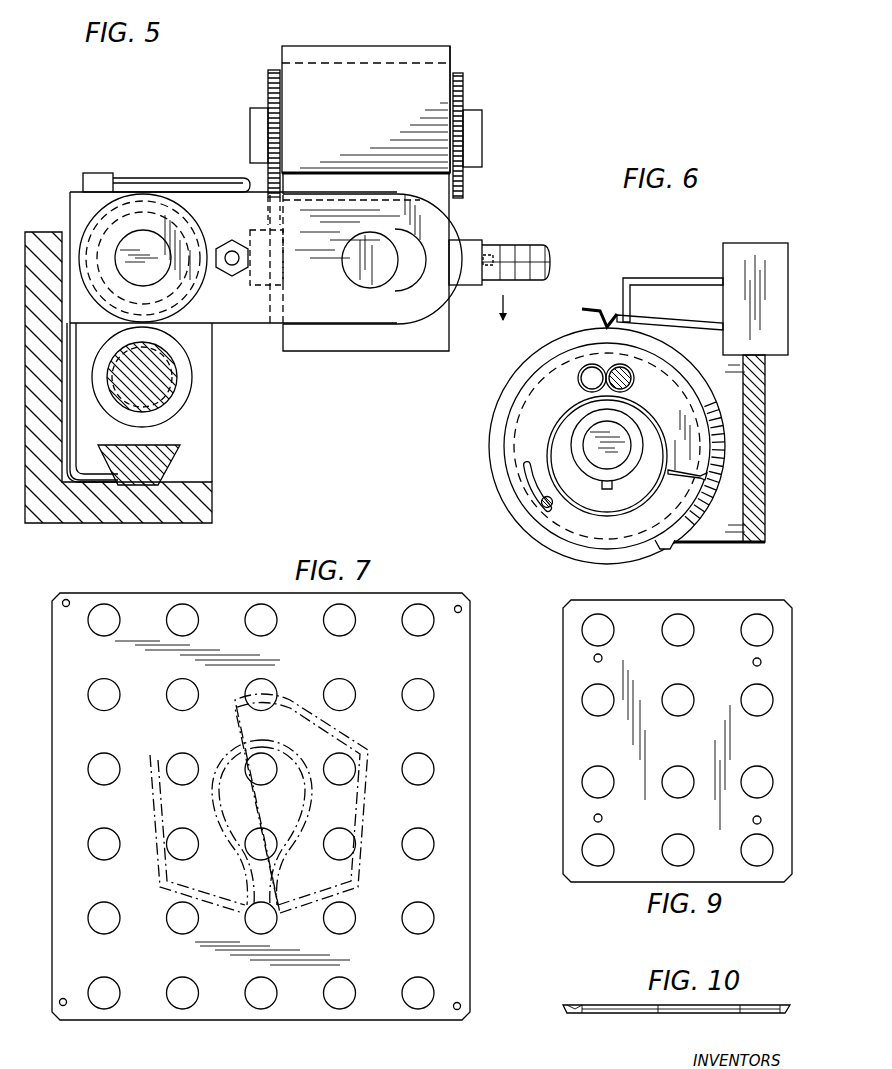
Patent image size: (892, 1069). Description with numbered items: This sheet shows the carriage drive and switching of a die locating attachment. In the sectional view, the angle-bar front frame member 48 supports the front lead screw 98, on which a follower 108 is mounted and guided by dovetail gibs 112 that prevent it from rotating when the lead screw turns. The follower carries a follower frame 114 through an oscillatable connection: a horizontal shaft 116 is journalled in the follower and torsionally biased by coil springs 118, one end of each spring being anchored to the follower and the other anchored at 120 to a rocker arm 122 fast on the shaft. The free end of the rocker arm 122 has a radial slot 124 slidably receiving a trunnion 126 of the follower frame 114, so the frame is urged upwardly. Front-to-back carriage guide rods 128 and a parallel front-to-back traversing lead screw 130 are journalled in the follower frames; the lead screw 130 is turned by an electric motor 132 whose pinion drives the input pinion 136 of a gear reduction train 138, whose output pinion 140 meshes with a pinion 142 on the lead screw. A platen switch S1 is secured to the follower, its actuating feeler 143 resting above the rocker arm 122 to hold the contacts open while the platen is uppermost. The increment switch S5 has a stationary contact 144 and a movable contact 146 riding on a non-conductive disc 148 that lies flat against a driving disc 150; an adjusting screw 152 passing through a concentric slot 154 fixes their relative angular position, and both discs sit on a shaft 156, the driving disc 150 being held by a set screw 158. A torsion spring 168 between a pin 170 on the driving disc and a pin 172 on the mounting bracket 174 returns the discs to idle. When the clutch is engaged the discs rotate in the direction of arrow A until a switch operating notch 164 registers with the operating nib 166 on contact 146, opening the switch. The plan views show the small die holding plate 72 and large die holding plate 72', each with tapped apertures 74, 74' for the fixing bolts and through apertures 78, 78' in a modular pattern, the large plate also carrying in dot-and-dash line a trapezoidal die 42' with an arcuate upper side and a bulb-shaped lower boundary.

In FIG. 5, the front and back members 48 is at (212, 510).
In FIG. 5, the front lead screw 98 is at (170, 385).
In FIG. 5, the follower 108 is at (212, 450).
In FIG. 5, the dovetail gibs 112 is at (168, 465).
In FIG. 5, the follower frame 114 is at (425, 348).
In FIG. 5, the horizontal shaft 116 is at (145, 258).
In FIG. 5, the coil springs 118 is at (118, 325).
In FIG. 5, the spring anchor 120 is at (232, 258).
In FIG. 5, the rocker arm 122 is at (346, 325).
In FIG. 5, the radial slots 124 is at (395, 285).
In FIG. 5, the trunnions 126 is at (355, 272).
In FIG. 5, the carriage guide rods 128 is at (492, 248).
In FIG. 5, the front-to-back traversing lead screw 130 is at (540, 243).
In FIG. 5, the front-to-back traversing electric motor 132 is at (410, 63).
In FIG. 5, the input pinion 136 is at (463, 80).
In FIG. 5, the gear reduction train 138 is at (452, 48).
In FIG. 5, the output pinion 140 is at (274, 70).
In FIG. 5, the pinion 142 is at (275, 325).
In FIG. 5, the actuating feeler 143 is at (222, 168).
In FIG. 6, the stationary contact 144 is at (700, 281).
In FIG. 6, the movable contact 146 is at (700, 323).
In FIG. 6, the electrically non-conductive disc 148 is at (489, 443).
In FIG. 6, the driving disc 150 is at (700, 420).
In FIG. 6, the adjusting screw 152 is at (543, 505).
In FIG. 6, the concentric slot 154 is at (700, 478).
In FIG. 6, the shaft 156 is at (622, 455).
In FIG. 6, the set screw 158 is at (560, 470).
In FIG. 6, the switch operating notch 164 is at (665, 549).
In FIG. 6, the operating nib 166 is at (598, 310).
In FIG. 6, the torsion spring 168 is at (668, 405).
In FIG. 6, the pin 170 is at (583, 384).
In FIG. 6, the pin 172 is at (634, 380).
In FIG. 6, the bracket 174 is at (765, 378).
In FIG. 5, the platen switch S1 is at (83, 185).
In FIG. 6, the increment switch S5 is at (755, 243).
In FIG. 6, the arrow A is at (598, 355).
In FIG. 9, the small die holding plate 72 is at (692, 741).
In FIG. 9, the tapped apertures 74 is at (677, 737).
In FIG. 9, the through apertures 78 is at (704, 740).
In FIG. 7, the large die holding plate 72' is at (279, 806).
In FIG. 7, the tapped apertures 74' is at (285, 805).
In FIG. 7, the through apertures 78' is at (297, 806).
In FIG. 7, the die 42' is at (267, 803).